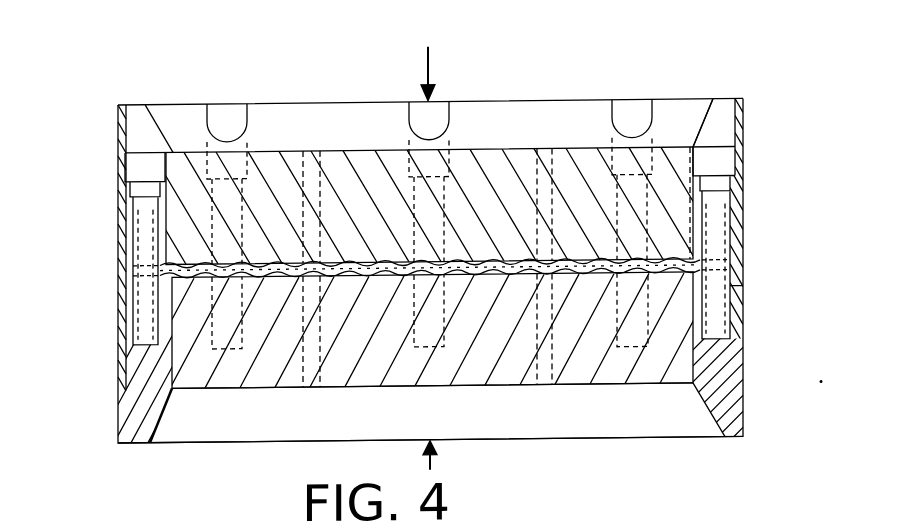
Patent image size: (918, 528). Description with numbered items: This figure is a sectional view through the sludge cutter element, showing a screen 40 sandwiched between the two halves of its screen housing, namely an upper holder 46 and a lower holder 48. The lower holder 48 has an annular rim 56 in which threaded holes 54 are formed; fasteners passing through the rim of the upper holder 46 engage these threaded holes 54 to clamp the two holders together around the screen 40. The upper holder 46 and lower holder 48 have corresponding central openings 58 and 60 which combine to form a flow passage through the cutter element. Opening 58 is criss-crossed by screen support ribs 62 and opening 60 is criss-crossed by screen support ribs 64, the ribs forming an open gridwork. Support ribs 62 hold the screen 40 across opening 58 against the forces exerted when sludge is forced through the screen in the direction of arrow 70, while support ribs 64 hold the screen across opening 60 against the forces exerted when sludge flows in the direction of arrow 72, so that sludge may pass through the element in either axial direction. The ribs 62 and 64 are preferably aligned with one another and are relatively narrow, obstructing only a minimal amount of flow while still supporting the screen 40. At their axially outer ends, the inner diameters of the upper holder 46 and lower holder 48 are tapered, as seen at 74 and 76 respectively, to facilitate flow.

The screen 40 is at (275, 281).
The upper holder 46 is at (744, 210).
The lower holder 48 is at (745, 377).
The threaded holes 54 is at (140, 345).
The annular rim 56 is at (128, 386).
The central opening 58 is at (514, 136).
The central opening 60 is at (599, 416).
The screen support ribs 62 is at (281, 154).
The screen support ribs 64 is at (322, 347).
The arrow 70 is at (432, 472).
The arrow 72 is at (432, 59).
The taper 74 is at (697, 130).
The taper 76 is at (162, 416).